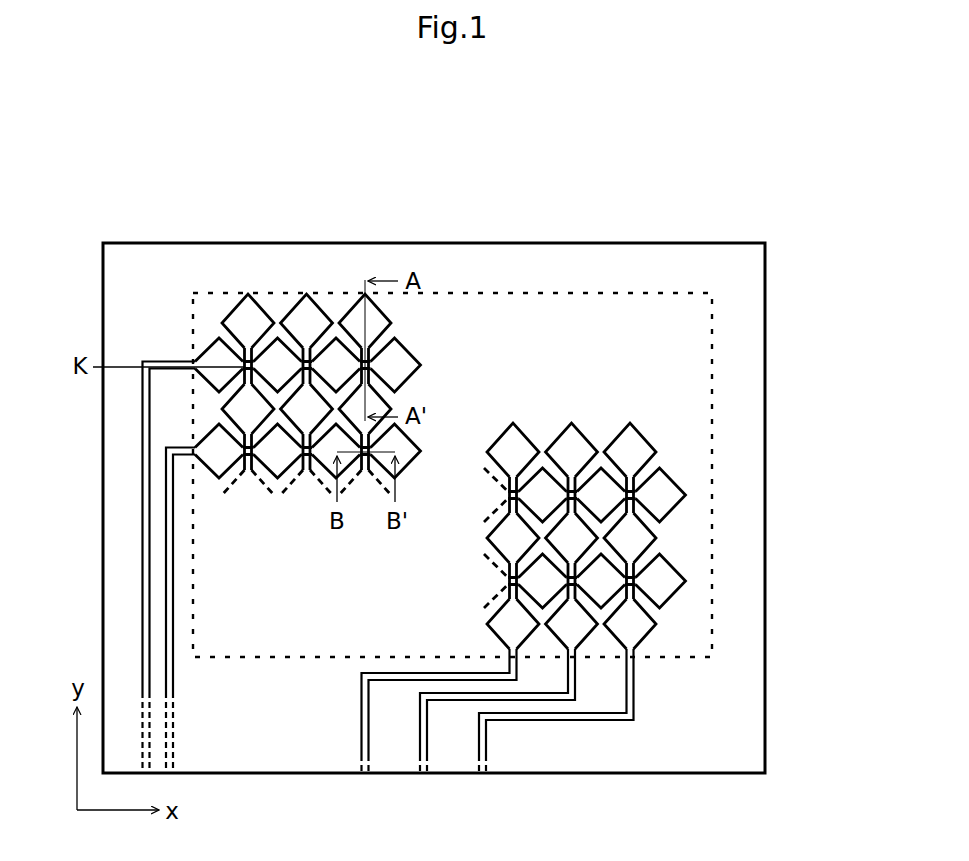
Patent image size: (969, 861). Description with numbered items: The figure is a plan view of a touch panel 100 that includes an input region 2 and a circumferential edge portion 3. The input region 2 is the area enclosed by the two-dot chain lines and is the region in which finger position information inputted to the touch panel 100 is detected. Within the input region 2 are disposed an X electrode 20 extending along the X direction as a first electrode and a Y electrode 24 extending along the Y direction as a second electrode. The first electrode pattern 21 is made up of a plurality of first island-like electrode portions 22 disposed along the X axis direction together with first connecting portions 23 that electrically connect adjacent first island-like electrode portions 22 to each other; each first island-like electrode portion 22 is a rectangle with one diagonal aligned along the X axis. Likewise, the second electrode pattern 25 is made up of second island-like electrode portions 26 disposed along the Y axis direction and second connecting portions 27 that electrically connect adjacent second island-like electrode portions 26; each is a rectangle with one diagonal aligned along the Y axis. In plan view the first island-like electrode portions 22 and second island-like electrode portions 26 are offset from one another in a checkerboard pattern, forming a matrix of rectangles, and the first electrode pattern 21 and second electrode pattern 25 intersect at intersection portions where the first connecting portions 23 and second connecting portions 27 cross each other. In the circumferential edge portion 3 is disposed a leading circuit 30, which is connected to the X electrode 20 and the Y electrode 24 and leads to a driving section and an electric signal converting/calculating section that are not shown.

The touch panel 100 is at (525, 233).
The circumferential edge portion 3 is at (731, 272).
The input region 2 is at (655, 334).
The X electrode 20 is at (537, 332).
The first electrode pattern 21 is at (421, 437).
The first island-like electrode portion 22 is at (401, 358).
The first connecting portion 23 is at (388, 397).
The Y electrode 24 is at (130, 165).
The second electrode pattern 25 is at (233, 212).
The second island-like electrode portion 26 is at (245, 318).
The second connecting portion 27 is at (245, 352).
The leading circuit 30 is at (442, 777).